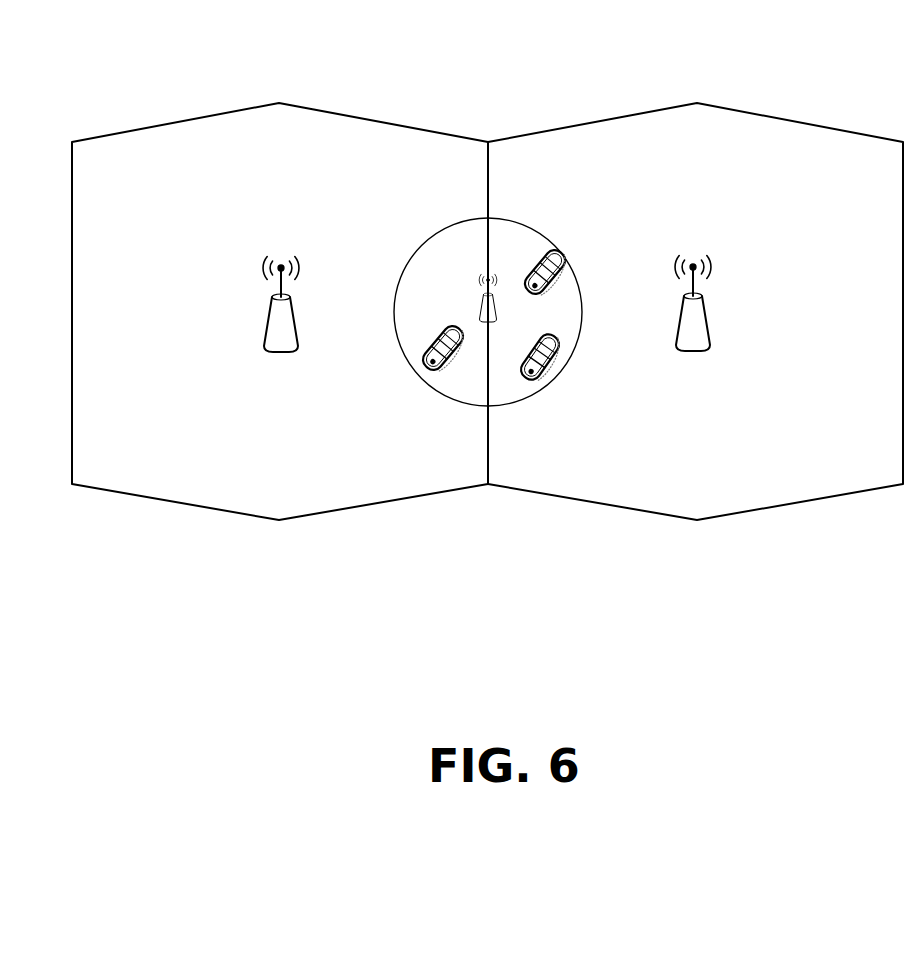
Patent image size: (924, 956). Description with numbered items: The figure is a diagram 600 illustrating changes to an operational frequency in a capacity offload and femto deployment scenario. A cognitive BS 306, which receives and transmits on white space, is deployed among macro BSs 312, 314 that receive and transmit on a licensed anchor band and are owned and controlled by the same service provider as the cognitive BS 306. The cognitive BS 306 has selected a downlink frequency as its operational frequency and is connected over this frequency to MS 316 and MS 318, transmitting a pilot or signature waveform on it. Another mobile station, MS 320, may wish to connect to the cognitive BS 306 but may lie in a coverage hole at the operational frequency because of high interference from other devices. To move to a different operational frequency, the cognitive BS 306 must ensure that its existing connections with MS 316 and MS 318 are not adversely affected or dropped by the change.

The diagram 600 is at (106, 80).
The cognitive BS 306 is at (487, 265).
The macro BS 312 is at (237, 290).
The macro BS 314 is at (649, 289).
The MS 316 is at (538, 268).
The MS 318 is at (568, 358).
The MS 320 is at (437, 342).